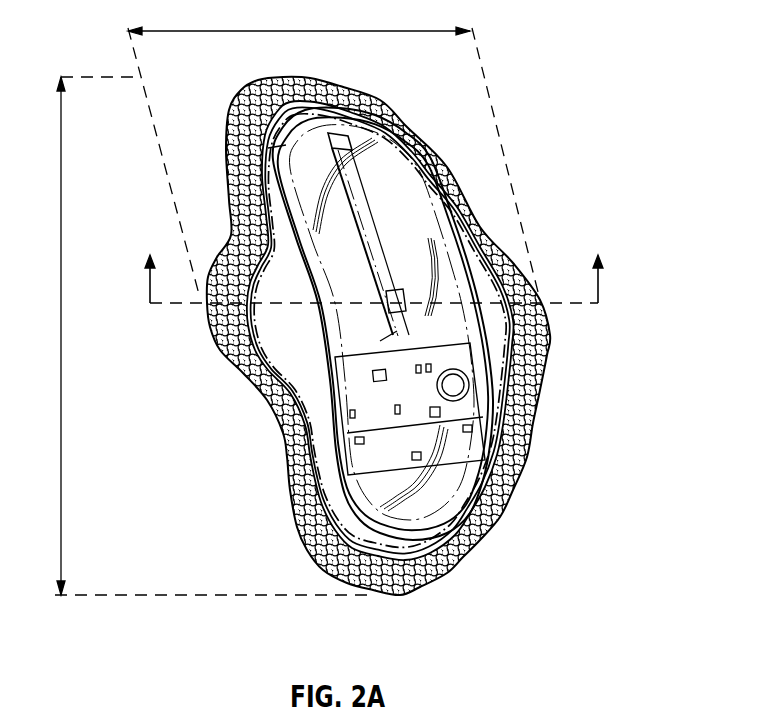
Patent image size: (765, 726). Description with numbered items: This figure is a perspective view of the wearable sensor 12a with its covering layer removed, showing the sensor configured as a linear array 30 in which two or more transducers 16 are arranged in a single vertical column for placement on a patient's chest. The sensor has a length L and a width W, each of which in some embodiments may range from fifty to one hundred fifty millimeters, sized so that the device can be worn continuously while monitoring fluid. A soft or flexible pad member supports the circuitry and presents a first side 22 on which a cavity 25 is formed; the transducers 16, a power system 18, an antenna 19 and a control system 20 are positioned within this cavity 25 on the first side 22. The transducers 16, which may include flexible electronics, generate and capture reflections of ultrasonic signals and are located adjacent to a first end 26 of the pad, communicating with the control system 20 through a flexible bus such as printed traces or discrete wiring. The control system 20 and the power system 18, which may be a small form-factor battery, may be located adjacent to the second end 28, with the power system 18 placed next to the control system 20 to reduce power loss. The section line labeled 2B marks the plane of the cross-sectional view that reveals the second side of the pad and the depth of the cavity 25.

The wearable sensor 12a is at (538, 512).
The linear array 30 is at (440, 76).
The second end 28 is at (461, 556).
The first end 26 is at (314, 101).
The cavity 25 is at (348, 112).
The first side 22 is at (413, 560).
The control system 20 is at (472, 343).
The antenna 19 is at (455, 386).
The power system 18 is at (458, 450).
The transducer 16 is at (358, 140).
The width W is at (280, 31).
The length L is at (60, 302).
The section line 2B is at (373, 263).